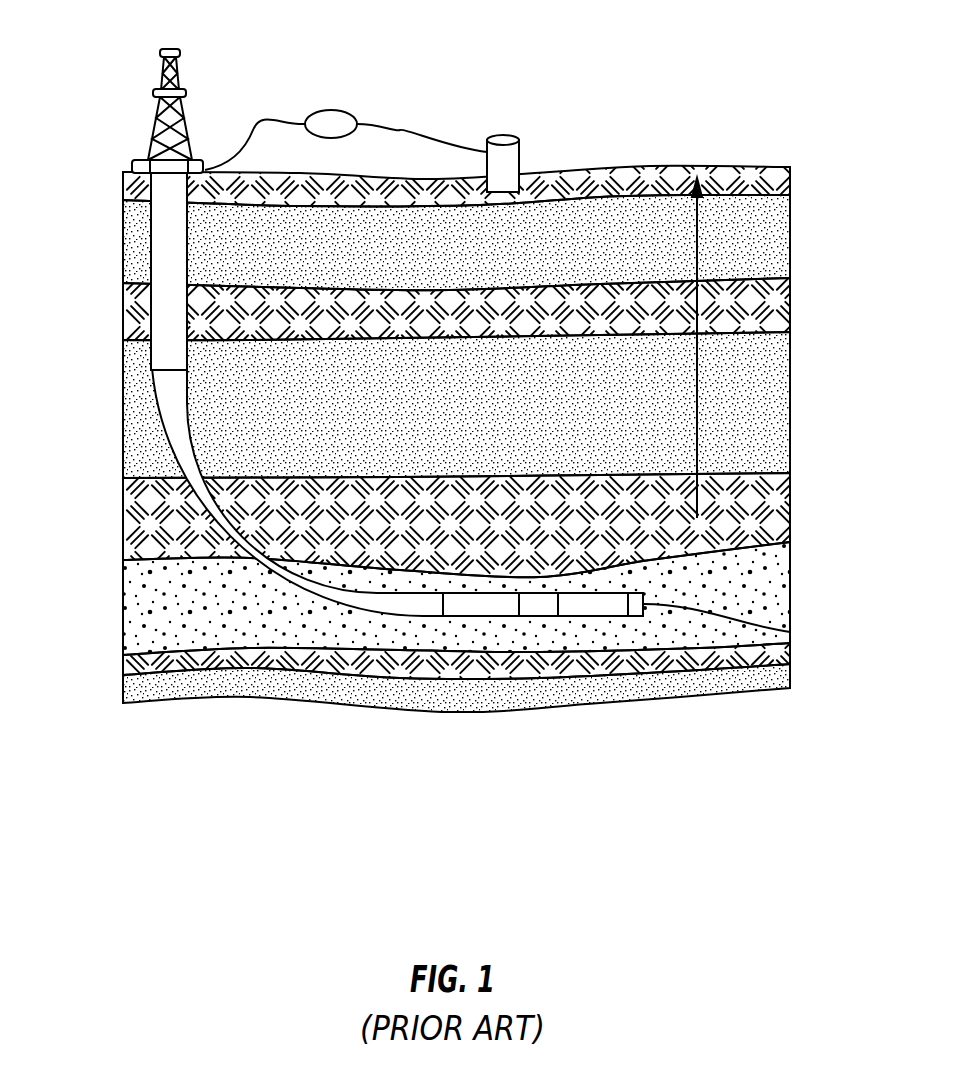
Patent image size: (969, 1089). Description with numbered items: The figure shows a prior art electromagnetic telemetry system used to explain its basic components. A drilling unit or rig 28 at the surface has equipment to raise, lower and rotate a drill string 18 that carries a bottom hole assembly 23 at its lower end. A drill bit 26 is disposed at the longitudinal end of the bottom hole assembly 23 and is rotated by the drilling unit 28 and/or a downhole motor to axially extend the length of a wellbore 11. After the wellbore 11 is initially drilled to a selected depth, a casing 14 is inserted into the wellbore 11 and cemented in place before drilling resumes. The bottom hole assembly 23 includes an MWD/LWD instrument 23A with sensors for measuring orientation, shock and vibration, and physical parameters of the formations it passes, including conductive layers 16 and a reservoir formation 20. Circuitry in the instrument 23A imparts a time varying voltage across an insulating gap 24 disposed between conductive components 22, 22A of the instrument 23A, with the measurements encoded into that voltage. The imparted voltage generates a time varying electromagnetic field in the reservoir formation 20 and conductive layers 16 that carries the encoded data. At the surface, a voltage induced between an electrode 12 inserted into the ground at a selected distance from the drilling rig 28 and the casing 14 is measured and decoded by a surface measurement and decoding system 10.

The surface measurement and decoding system 10 is at (330, 110).
The wellbore 11 is at (205, 487).
The electrode 12 is at (527, 157).
The casing 14 is at (131, 322).
The conductive layers 16 is at (718, 348).
The drill string 18 is at (193, 423).
The reservoir formation 20 is at (228, 627).
The conductive component 22 is at (487, 617).
The conductive component 22A is at (589, 617).
The bottom hole assembly 23 is at (502, 634).
The MWD/LWD instrument 23A is at (546, 578).
The insulating gap 24 is at (535, 617).
The drill bit 26 is at (790, 632).
The drilling unit 28 is at (148, 122).